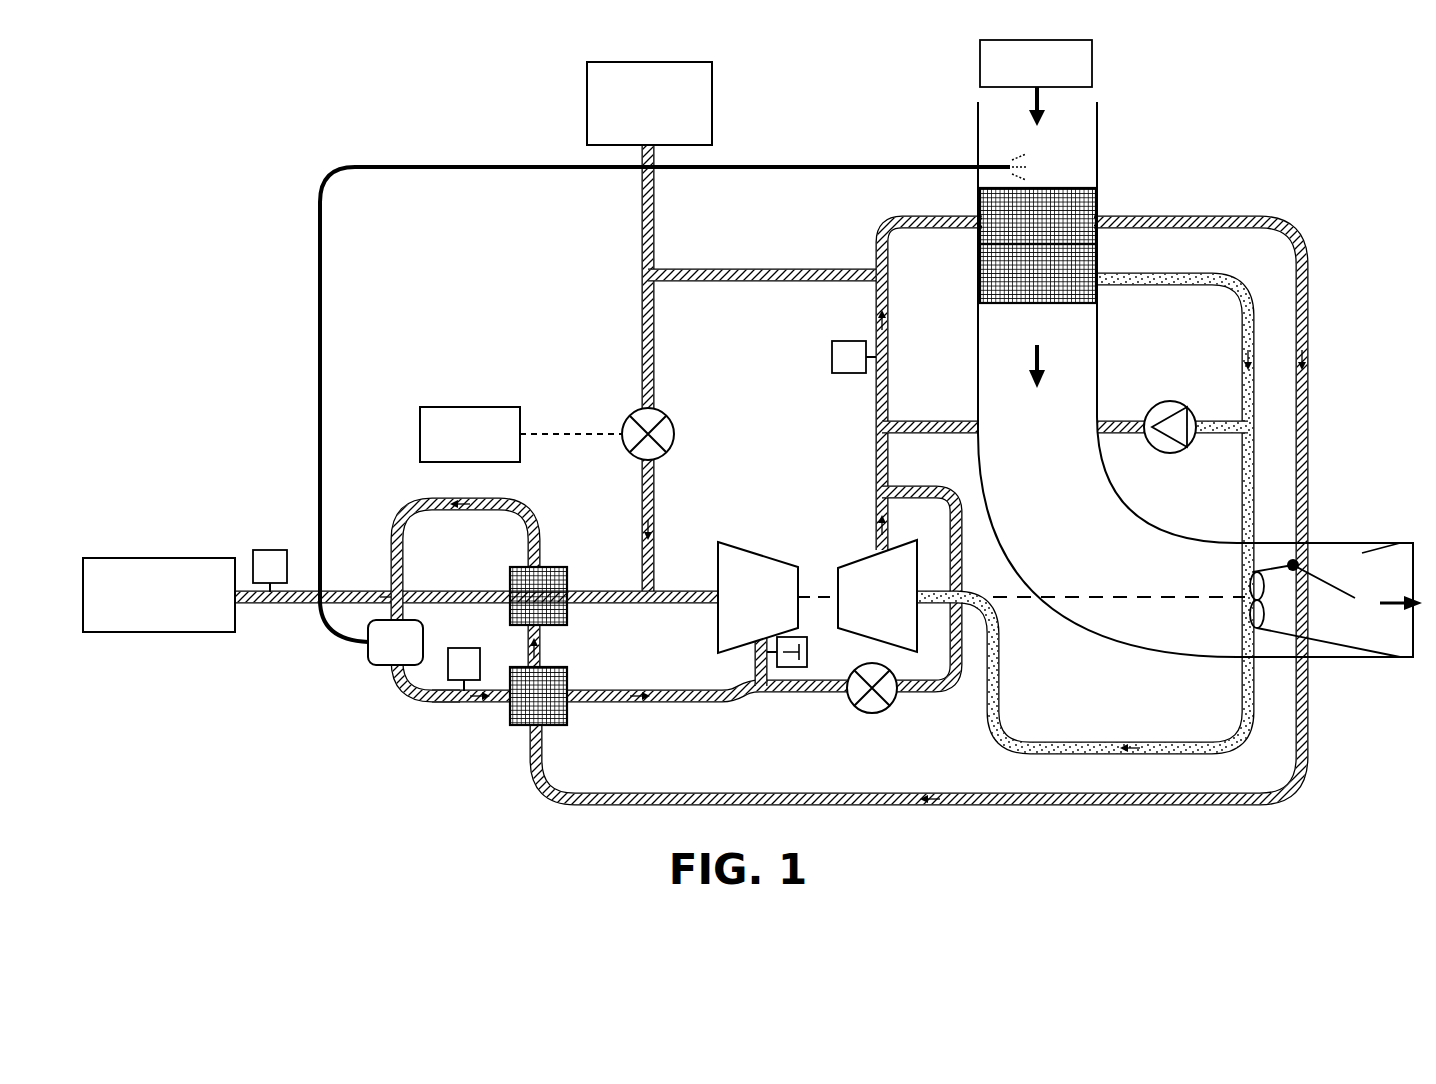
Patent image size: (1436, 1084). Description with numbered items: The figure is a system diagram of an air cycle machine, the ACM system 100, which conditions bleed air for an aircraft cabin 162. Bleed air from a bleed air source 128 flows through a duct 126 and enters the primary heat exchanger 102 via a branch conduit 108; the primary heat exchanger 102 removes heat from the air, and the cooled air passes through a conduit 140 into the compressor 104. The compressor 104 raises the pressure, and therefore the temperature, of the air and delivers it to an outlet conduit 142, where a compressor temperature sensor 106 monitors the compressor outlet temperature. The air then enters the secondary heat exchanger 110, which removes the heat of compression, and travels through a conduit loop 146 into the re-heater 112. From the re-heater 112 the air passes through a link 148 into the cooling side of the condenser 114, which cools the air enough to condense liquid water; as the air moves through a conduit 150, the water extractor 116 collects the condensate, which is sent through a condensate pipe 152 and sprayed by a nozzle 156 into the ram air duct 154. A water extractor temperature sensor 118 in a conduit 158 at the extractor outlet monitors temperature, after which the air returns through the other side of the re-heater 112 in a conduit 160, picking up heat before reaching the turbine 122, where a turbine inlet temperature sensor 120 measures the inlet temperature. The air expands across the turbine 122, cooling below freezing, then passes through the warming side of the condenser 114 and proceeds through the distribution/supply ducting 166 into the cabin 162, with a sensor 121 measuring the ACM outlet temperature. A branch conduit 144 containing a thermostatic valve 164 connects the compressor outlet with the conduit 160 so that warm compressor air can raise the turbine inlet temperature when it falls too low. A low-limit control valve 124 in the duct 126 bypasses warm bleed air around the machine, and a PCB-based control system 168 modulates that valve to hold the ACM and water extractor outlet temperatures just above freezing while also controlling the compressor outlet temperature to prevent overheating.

The ACM system 100 is at (1236, 834).
The primary heat exchanger 102 is at (1078, 290).
The compressor 104 is at (860, 572).
The compressor temperature sensor 106 is at (830, 352).
The branch conduit 108 is at (702, 268).
The secondary heat exchanger 110 is at (1080, 205).
The re-heater 112 is at (510, 725).
The condenser 114 is at (555, 568).
The water extractor 116 is at (372, 660).
The water extractor temperature sensor 118 is at (462, 647).
The turbine inlet temperature sensor 120 is at (790, 670).
The sensor 121 is at (270, 549).
The turbine 122 is at (748, 570).
The low-limit control valve 124 is at (676, 440).
The duct 126 is at (641, 316).
The bleed air source 128 is at (714, 90).
The conduit 140 is at (1252, 404).
The outlet conduit 142 is at (872, 420).
The branch conduit 144 is at (925, 698).
The conduit loop 146 is at (1012, 805).
The link 148 is at (545, 648).
The conduit 150 is at (500, 500).
The condensate pipe 152 is at (428, 169).
The ram air duct 154 is at (976, 100).
The nozzle 156 is at (1000, 158).
The conduit 158 is at (428, 702).
The conduit 160 is at (605, 703).
The cabin 162 is at (108, 558).
The valve 164 is at (862, 712).
The distribution/supply ducting 166 is at (255, 605).
The control system 168 is at (460, 406).